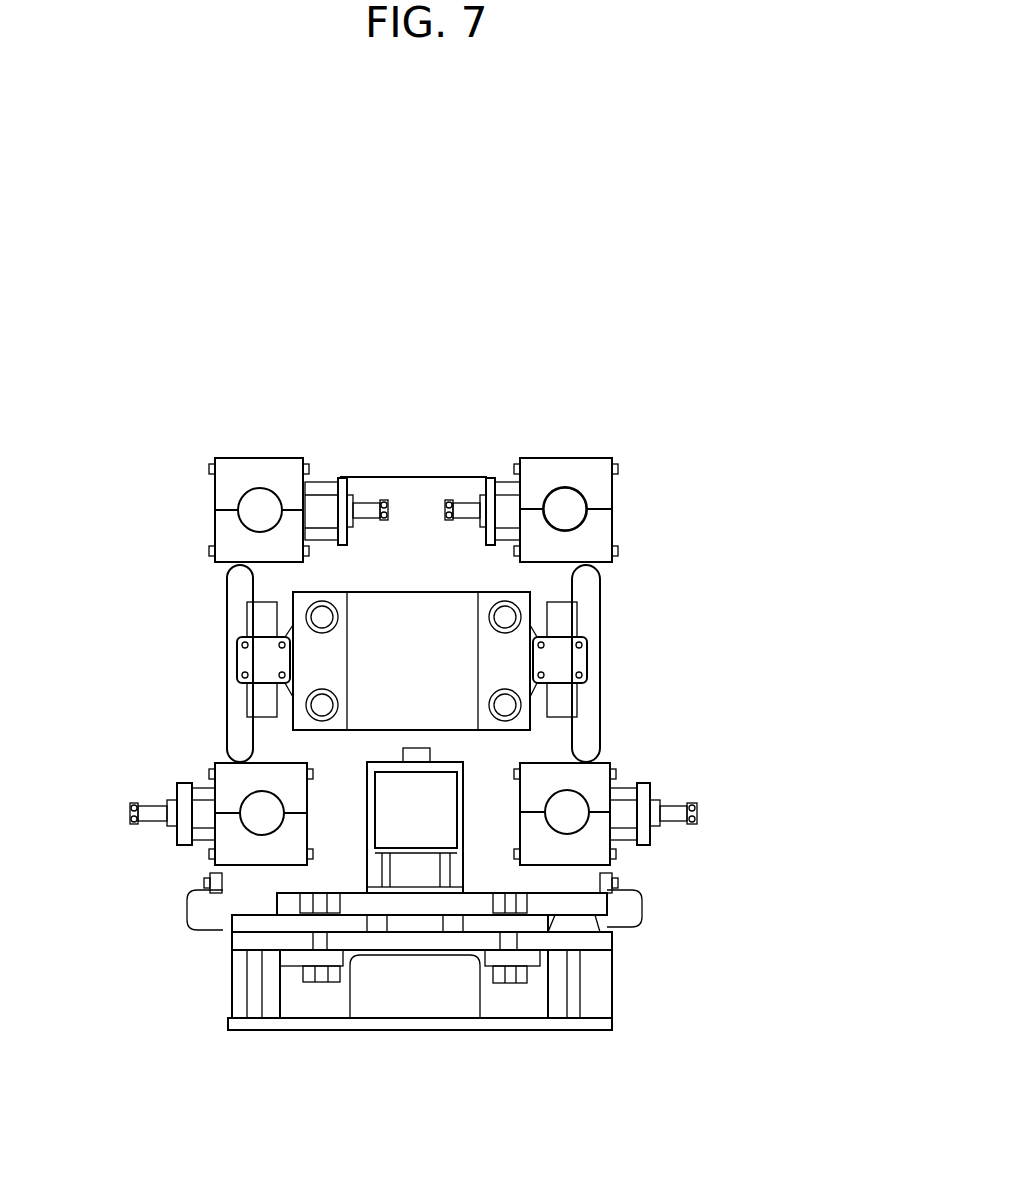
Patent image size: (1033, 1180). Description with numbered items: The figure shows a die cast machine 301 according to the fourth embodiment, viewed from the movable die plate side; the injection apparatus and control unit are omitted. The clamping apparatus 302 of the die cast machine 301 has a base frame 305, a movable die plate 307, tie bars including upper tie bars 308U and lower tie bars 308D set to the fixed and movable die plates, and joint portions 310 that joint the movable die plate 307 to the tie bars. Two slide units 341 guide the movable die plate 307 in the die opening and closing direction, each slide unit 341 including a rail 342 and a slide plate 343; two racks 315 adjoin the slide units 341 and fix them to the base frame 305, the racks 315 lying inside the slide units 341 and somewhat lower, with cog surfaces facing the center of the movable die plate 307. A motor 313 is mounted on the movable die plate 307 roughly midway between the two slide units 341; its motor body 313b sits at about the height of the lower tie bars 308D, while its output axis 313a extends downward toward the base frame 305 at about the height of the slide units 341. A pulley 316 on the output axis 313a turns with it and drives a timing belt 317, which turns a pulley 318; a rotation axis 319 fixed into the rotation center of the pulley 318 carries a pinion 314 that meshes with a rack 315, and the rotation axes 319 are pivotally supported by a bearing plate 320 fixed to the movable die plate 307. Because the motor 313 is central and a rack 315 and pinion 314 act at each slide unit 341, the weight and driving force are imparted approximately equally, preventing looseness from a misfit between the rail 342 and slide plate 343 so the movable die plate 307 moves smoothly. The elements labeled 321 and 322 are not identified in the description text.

The die cast machine 301 is at (446, 276).
The clamping apparatus 302 is at (650, 497).
The base frame 305 is at (610, 990).
The movable die plate 307 is at (438, 483).
The upper tie bars 308U is at (568, 515).
The lower tie bars 308D is at (572, 805).
The joint portions 310 is at (583, 473).
The motor 313 is at (395, 820).
The output axis 313a is at (405, 889).
The motor body 313b is at (397, 790).
The pinion 314 is at (283, 960).
The rack 315 is at (280, 957).
The pulley 316 is at (478, 960).
The timing belt 317 is at (430, 923).
The pulley 318 is at (383, 923).
The rotation axis 319 is at (323, 965).
The bearing plate 320 is at (292, 938).
The upper roller unit 321 is at (290, 425).
The pressing cylinder 322 is at (365, 497).
The slide unit 341 is at (650, 912).
The rail 342 is at (605, 937).
The slide plate 343 is at (590, 883).